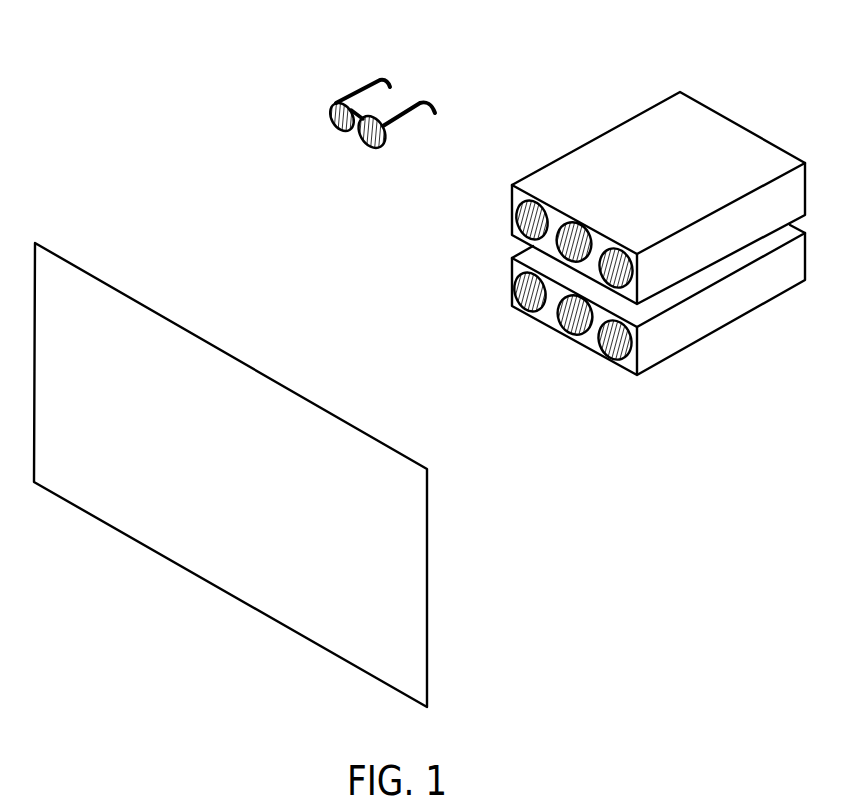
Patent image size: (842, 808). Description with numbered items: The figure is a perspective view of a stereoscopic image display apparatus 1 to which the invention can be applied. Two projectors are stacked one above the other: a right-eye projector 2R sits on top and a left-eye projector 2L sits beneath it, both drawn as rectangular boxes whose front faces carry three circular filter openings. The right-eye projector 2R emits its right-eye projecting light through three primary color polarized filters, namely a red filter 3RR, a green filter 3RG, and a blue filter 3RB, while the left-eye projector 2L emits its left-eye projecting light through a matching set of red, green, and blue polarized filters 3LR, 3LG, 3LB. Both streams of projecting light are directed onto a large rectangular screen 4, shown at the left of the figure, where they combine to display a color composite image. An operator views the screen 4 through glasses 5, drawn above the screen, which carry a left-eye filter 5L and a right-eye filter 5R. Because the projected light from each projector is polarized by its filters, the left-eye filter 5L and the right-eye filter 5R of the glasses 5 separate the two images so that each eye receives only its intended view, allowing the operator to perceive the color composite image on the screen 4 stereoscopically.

The stereoscopic image display apparatus 1 is at (648, 724).
The right-eye projector 2R is at (658, 173).
The left-eye projector 2L is at (628, 322).
The red polarized filter of right-eye projector 3RR is at (540, 199).
The green polarized filter of right-eye projector 3RG is at (580, 224).
The blue polarized filter of right-eye projector 3RB is at (610, 251).
The red polarized filter of left-eye projector 3LR is at (518, 306).
The green polarized filter of left-eye projector 3LG is at (565, 330).
The blue polarized filter of left-eye projector 3LB is at (613, 359).
The screen 4 is at (427, 582).
The glasses 5 is at (363, 112).
The right-eye filter 5R is at (337, 126).
The left-eye filter 5L is at (378, 148).